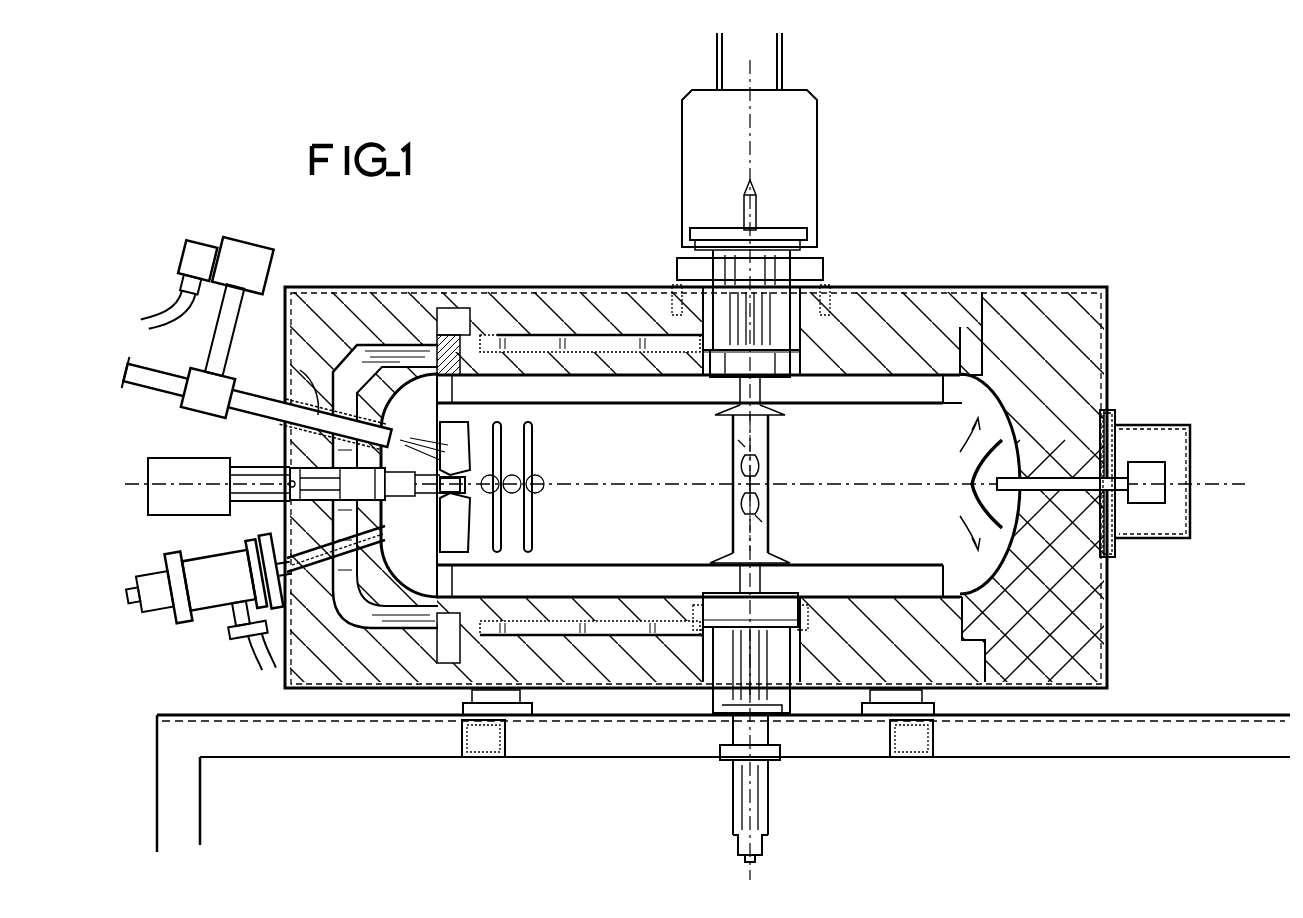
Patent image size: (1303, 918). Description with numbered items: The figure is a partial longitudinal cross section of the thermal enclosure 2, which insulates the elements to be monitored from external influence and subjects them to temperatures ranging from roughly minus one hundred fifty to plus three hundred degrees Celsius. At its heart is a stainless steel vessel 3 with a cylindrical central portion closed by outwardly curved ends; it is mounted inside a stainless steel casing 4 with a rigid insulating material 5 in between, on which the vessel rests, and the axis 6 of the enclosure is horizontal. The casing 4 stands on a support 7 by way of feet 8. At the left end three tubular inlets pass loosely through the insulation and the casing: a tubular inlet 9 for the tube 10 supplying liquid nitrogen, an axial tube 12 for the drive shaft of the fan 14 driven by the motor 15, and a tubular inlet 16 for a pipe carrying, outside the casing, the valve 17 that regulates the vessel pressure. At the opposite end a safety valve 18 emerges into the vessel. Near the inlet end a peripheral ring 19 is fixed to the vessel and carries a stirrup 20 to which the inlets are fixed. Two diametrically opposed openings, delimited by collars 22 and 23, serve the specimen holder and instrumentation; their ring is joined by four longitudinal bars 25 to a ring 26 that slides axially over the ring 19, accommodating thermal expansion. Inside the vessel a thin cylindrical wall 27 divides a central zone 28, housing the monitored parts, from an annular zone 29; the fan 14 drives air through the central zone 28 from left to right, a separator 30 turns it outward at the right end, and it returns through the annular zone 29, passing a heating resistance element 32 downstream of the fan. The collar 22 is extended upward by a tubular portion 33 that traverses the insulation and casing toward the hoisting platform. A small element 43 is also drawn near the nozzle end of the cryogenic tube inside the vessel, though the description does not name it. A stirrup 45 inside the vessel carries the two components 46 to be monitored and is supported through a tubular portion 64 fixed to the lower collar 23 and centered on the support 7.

The thermal enclosure 2 is at (1098, 258).
The stainless steel vessel 3 is at (925, 360).
The casing 4 is at (1108, 629).
The rigid insulating material 5 is at (1050, 578).
The axis 6 is at (1215, 491).
The support 7 is at (1180, 742).
The feet 8 is at (472, 712).
The tubular inlet 9 is at (305, 396).
The tube 10 is at (283, 420).
The axial tube 12 is at (280, 528).
The fan 14 is at (460, 532).
The motor 15 is at (158, 499).
The tubular inlet 16 is at (381, 561).
The valve 17 is at (203, 598).
The safety valve 18 is at (1145, 470).
The ring 19 is at (437, 335).
The stirrup 20 is at (372, 625).
The collar 22 is at (872, 362).
The collar 23 is at (800, 650).
The longitudinal bars 25 is at (566, 344).
The ring 26 is at (468, 332).
The cylindrical wall 27 is at (850, 405).
The central zone 28 is at (605, 540).
The annular zone 29 is at (628, 582).
The separator 30 is at (1010, 440).
The heating resistance element 32 is at (530, 467).
The tubular portion 33 is at (800, 302).
The electrode 43 is at (397, 492).
The stirrup 45 is at (734, 450).
The components to be monitored 46 is at (756, 489).
The tubular portion 64 is at (796, 700).